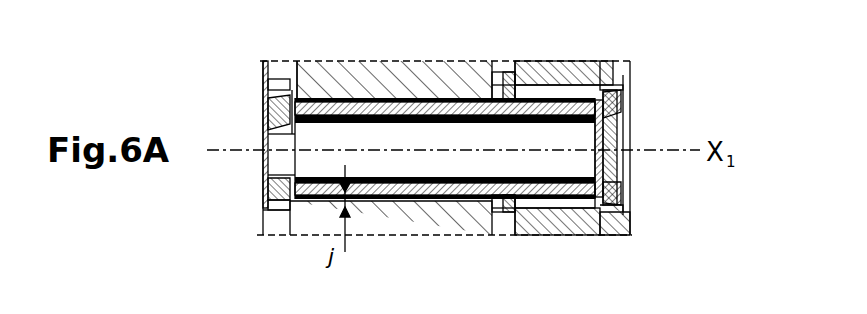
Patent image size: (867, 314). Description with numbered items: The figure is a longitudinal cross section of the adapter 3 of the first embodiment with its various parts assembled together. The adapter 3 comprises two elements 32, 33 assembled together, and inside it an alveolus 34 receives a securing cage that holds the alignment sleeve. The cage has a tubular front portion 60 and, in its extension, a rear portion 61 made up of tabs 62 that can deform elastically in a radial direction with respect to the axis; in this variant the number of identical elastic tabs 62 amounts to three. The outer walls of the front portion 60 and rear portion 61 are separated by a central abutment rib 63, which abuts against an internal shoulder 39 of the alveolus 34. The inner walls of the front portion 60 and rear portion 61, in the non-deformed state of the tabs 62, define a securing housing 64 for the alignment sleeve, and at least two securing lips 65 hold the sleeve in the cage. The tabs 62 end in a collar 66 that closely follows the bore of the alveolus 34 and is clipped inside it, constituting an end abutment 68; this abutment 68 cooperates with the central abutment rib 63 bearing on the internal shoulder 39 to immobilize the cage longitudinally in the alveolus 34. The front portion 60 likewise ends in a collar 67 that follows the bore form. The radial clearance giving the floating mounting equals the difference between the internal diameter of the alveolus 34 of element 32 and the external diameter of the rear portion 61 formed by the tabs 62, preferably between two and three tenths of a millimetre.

The adapter 3 is at (403, 163).
The element 32 is at (480, 61).
The element 33 is at (612, 62).
The alveolus 34 is at (612, 236).
The internal shoulder 39 is at (473, 217).
The front portion 60 is at (560, 222).
The rear portion 61 is at (312, 235).
The tabs 62 is at (263, 165).
The central abutment rib 63 is at (503, 72).
The securing housing 64 is at (598, 162).
The securing lips 65 is at (630, 119).
The collar 66 is at (263, 93).
The collar 67 is at (631, 101).
The end abutment 68 is at (303, 61).